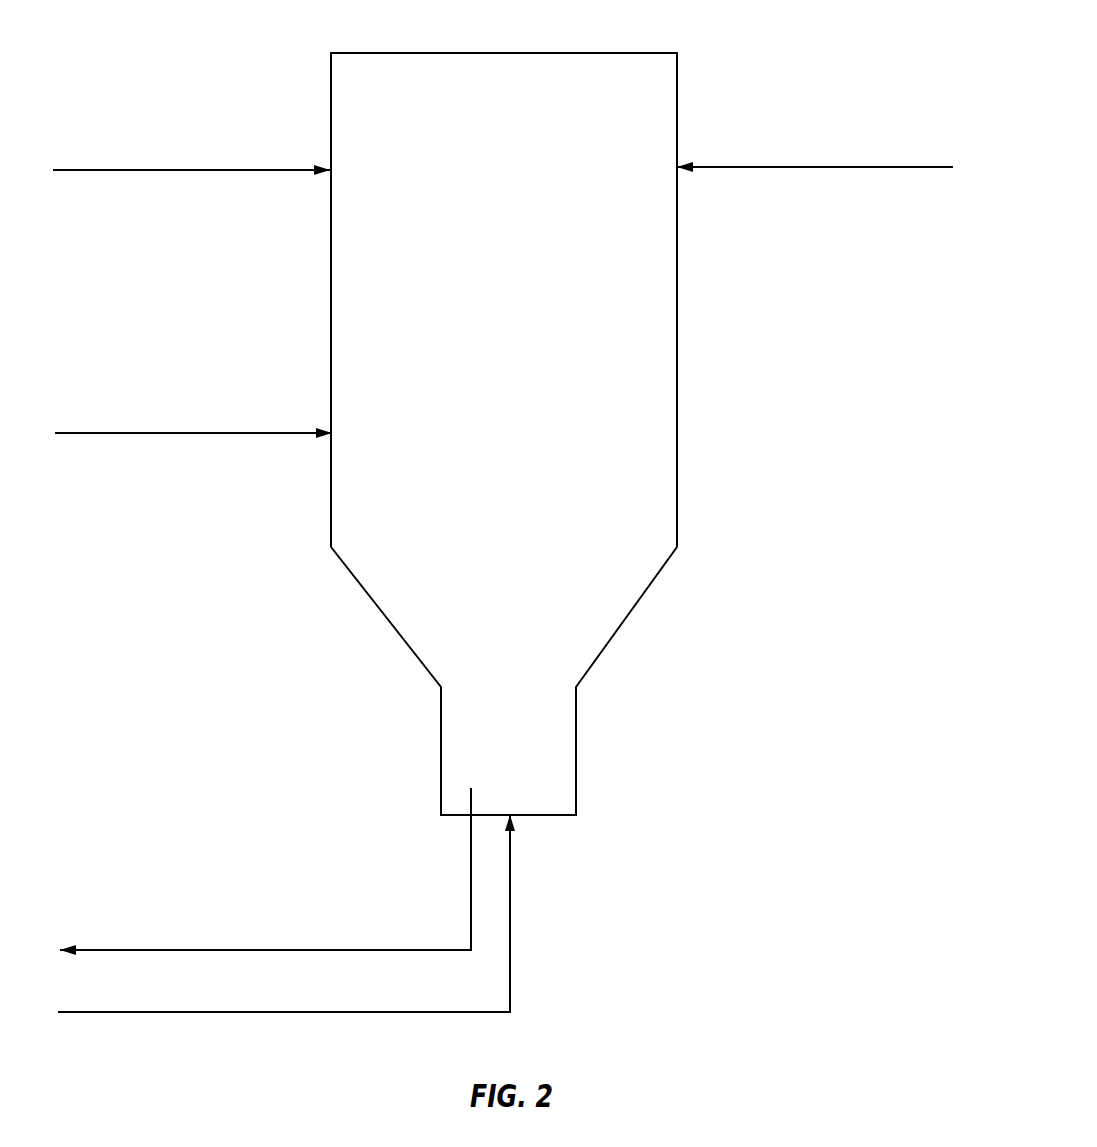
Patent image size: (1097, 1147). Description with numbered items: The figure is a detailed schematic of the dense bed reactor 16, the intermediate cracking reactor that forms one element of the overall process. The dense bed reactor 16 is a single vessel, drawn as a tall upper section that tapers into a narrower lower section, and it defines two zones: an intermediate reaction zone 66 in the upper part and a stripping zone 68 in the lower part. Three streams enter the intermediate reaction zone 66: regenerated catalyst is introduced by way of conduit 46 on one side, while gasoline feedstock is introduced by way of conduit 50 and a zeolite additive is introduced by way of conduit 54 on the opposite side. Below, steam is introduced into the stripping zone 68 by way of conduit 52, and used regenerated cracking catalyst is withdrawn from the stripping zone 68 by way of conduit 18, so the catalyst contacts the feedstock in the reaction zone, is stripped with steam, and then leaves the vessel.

The dense bed reactor 16 is at (504, 417).
The intermediate reaction zone 66 is at (521, 211).
The stripping zone 68 is at (523, 759).
The conduit 54 is at (236, 170).
The conduit 50 is at (238, 433).
The conduit 46 is at (830, 167).
The conduit 18 is at (242, 950).
The conduit 52 is at (242, 1012).